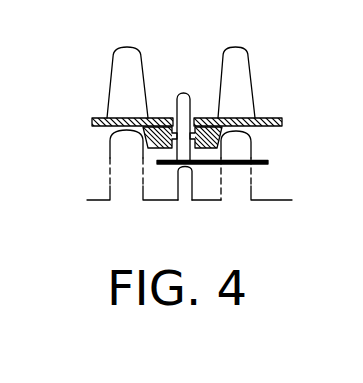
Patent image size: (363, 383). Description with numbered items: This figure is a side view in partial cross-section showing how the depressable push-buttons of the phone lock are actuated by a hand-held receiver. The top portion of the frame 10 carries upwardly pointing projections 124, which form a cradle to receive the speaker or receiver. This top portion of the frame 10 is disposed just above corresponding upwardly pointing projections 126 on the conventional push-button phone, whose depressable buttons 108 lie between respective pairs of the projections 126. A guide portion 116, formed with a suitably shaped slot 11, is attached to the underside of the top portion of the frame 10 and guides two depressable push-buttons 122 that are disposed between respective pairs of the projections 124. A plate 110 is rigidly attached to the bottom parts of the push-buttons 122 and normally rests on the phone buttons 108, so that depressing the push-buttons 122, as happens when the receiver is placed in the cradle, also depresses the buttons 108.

The frame 10 is at (100, 118).
The slot 11 is at (250, 142).
The depressable buttons 108 is at (176, 184).
The plate 110 is at (157, 161).
The guide portion 116 is at (142, 142).
The depressable push-buttons 122 is at (187, 63).
The upwardly pointing projections 124 is at (122, 48).
The upwardly pointing projections 126 is at (110, 163).